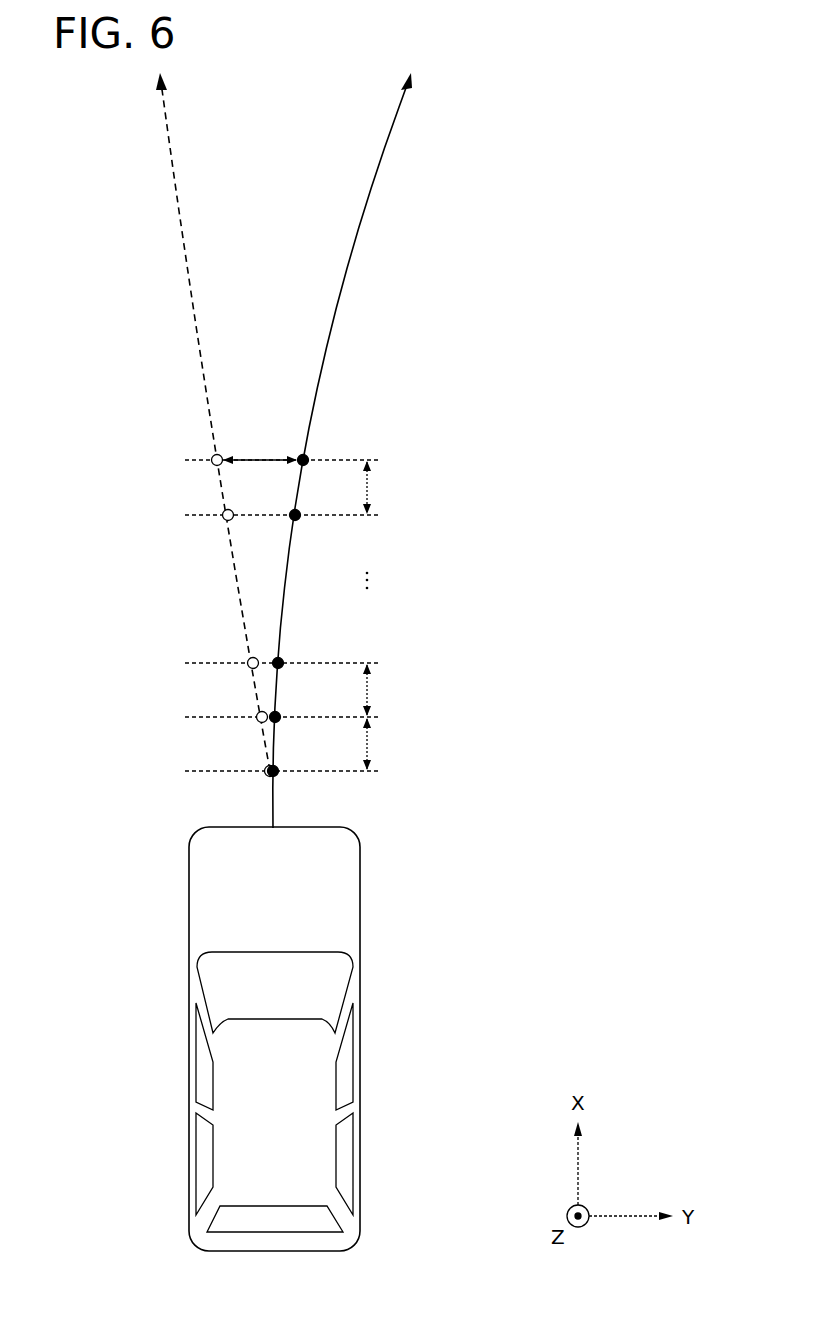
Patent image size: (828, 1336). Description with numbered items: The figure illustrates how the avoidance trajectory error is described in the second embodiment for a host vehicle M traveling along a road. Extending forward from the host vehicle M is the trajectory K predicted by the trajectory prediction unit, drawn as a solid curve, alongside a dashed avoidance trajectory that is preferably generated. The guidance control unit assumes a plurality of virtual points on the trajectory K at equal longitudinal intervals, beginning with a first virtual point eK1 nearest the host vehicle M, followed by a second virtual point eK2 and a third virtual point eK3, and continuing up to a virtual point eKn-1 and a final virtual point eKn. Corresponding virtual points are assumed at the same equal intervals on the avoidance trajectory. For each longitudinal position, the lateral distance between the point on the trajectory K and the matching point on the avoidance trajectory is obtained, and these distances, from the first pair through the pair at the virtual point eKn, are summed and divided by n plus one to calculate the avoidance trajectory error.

The host vehicle M is at (360, 1040).
The trajectory K is at (353, 241).
The virtual point on trajectory eKn is at (308, 455).
The virtual point on trajectory eKn-1 is at (299, 520).
The virtual point on trajectory eK3 is at (281, 658).
The virtual point on trajectory eK2 is at (278, 712).
The virtual point on trajectory eK1 is at (278, 777).